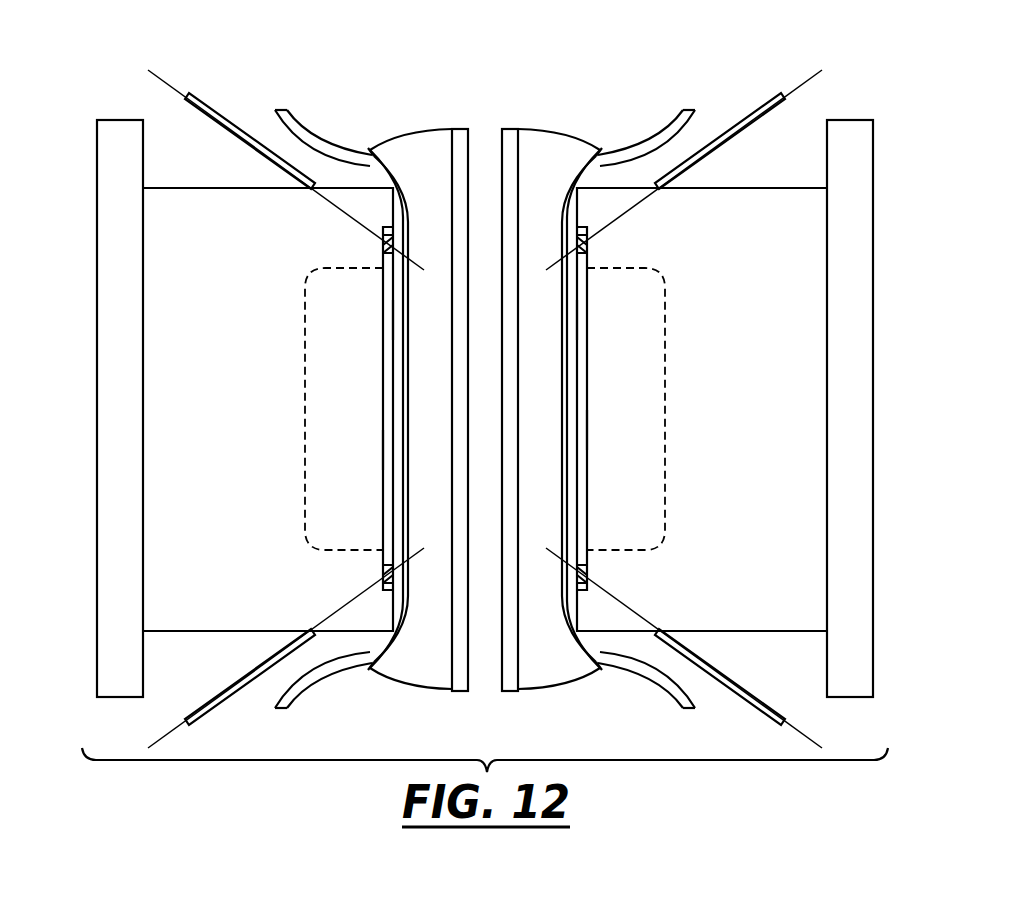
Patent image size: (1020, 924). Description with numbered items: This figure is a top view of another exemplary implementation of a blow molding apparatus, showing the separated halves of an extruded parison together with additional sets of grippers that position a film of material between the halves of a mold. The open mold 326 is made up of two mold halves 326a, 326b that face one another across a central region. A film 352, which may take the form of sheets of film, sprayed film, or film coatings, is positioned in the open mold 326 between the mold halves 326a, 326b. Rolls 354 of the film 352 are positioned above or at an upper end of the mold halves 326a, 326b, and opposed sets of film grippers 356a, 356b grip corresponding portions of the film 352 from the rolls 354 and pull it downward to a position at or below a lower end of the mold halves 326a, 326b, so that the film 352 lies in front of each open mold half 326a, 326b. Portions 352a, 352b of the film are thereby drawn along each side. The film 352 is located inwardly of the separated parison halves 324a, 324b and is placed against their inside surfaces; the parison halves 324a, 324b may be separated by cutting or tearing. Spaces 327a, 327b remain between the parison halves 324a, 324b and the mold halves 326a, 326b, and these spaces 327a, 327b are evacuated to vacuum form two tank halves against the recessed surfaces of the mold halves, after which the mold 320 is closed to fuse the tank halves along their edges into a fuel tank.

The mold 320 is at (85, 109).
The open mold 326 is at (72, 611).
The mold half 326a is at (240, 587).
The mold half 326b is at (787, 587).
The film 352 is at (432, 138).
The rolls of film 354 is at (508, 135).
The first flared strip 352a is at (192, 98).
The second flared strip 352b is at (787, 100).
The film grippers 356a is at (276, 113).
The film grippers 356b is at (694, 113).
The parison half 324a is at (397, 323).
The parison half 324b is at (573, 323).
The space 327a is at (387, 452).
The space 327b is at (582, 431).